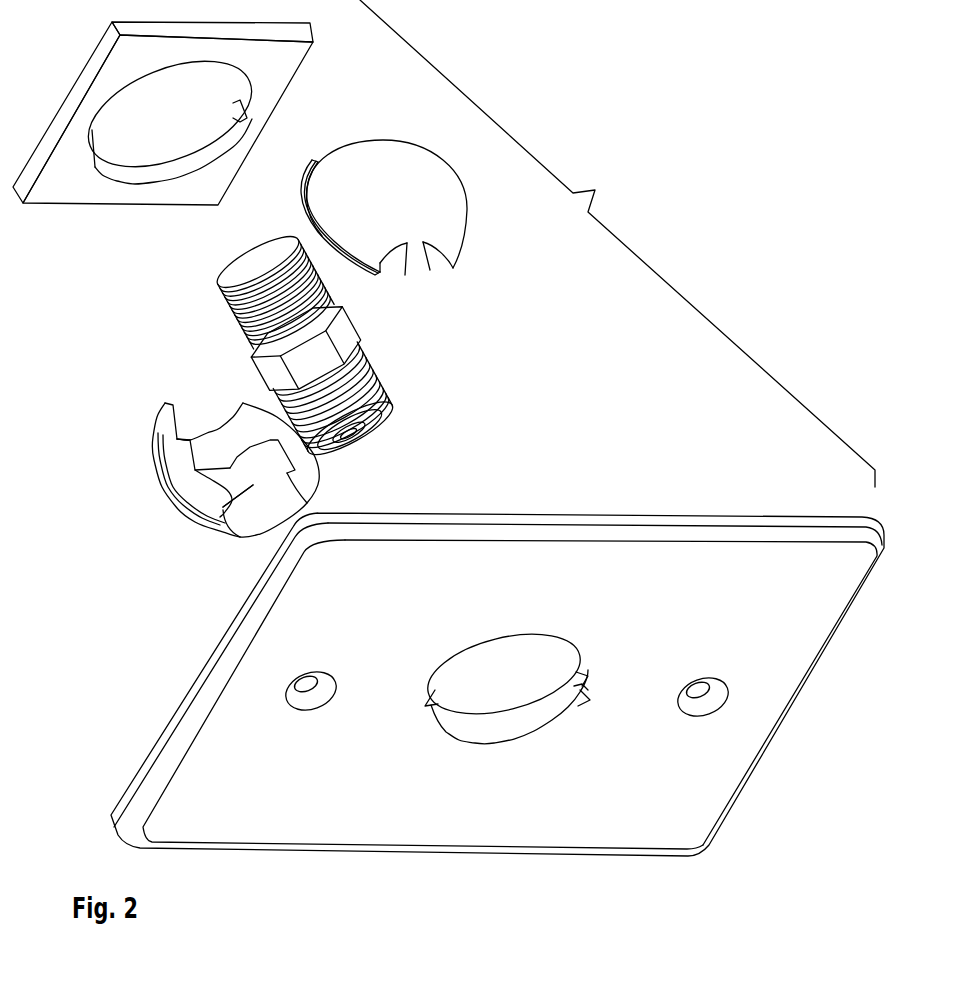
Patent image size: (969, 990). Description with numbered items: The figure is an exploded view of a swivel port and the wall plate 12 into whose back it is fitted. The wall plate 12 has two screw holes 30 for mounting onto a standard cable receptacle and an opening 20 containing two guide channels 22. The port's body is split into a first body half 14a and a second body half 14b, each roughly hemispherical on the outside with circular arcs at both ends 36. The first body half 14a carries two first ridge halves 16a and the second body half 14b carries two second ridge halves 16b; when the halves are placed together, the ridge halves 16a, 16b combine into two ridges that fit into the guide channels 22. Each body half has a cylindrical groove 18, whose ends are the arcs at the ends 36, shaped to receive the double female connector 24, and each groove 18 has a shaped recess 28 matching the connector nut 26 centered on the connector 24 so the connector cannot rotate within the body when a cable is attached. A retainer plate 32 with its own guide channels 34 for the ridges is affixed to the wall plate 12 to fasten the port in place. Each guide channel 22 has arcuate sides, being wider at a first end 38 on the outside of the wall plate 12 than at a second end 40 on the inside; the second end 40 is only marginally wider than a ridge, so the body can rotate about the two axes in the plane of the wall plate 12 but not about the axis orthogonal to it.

The wall plate 12 is at (540, 547).
The first body half 14a is at (160, 428).
The second body half 14b is at (452, 217).
The first ridge halves 16a is at (175, 475).
The second ridge halves 16b is at (210, 243).
The cylindrical groove 18 is at (427, 250).
The opening 20 is at (485, 745).
The guide channels 22 is at (437, 690).
The double female connector 24 is at (385, 396).
The connector nut 26 is at (365, 330).
The shaped recess 28 is at (253, 485).
The screw holes 30 is at (300, 690).
The retainer plate 32 is at (268, 95).
The guide channels 34 is at (242, 122).
The ends 36 is at (405, 246).
The first end 38 is at (582, 704).
The second end 40 is at (575, 688).